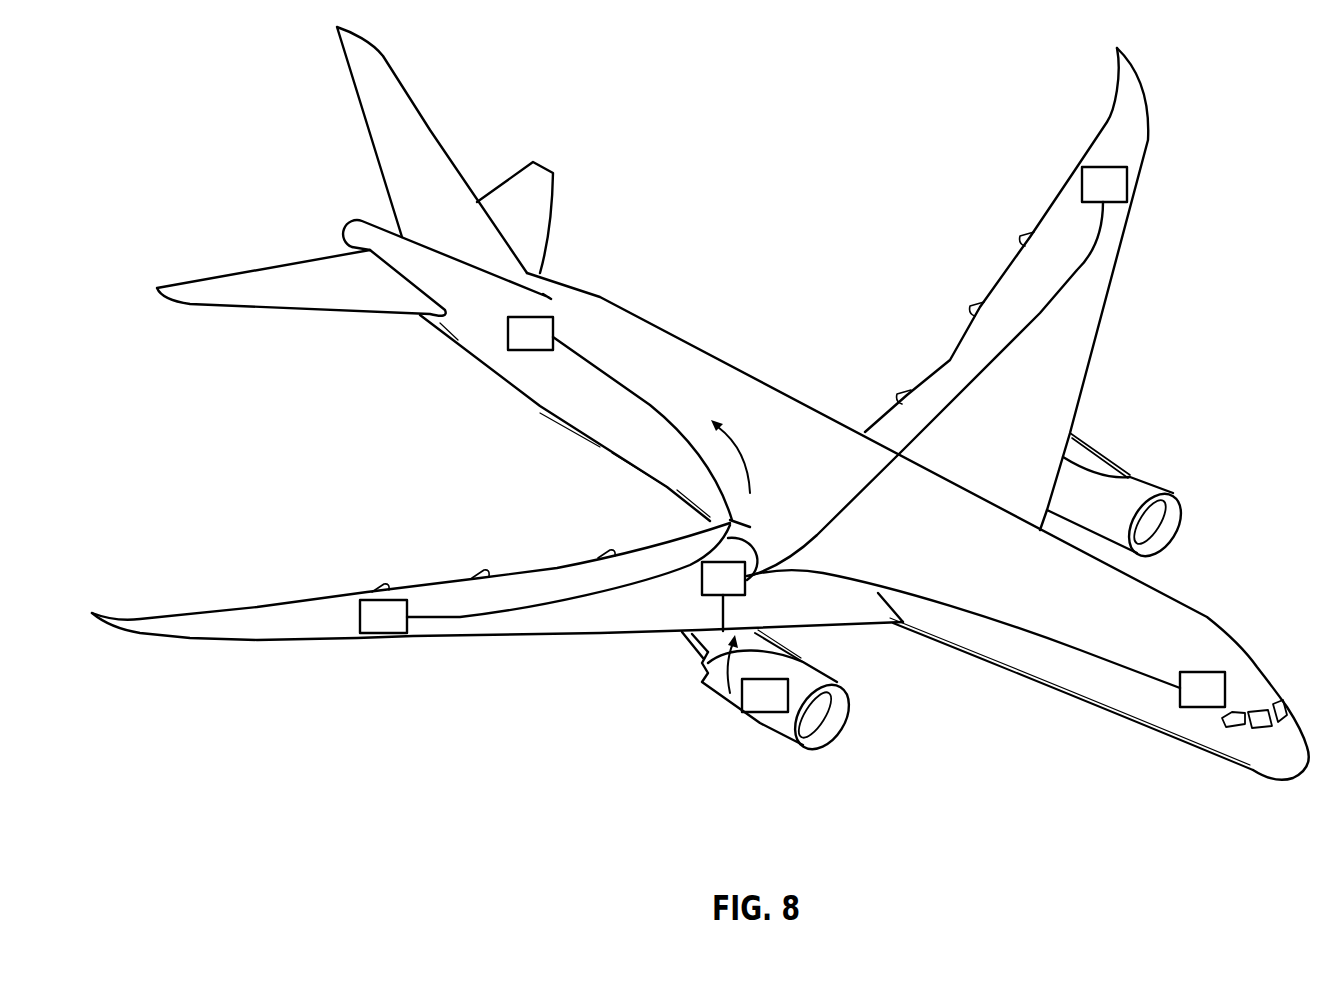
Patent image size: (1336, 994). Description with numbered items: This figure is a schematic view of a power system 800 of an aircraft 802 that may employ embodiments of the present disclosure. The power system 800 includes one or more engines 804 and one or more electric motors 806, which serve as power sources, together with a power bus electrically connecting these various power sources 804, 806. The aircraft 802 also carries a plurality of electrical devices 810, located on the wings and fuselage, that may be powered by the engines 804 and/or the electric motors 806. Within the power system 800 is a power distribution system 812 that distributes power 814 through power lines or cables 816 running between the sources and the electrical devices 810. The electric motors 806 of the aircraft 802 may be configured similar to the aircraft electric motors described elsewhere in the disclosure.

The power system 800 is at (243, 800).
The aircraft 802 is at (1012, 672).
The engine 804 is at (1148, 493).
The electric motor 806 is at (530, 352).
The electrical device 810 is at (1080, 186).
The power distribution system 812 is at (690, 562).
The power 814 is at (747, 457).
The power lines or cables 816 is at (650, 407).